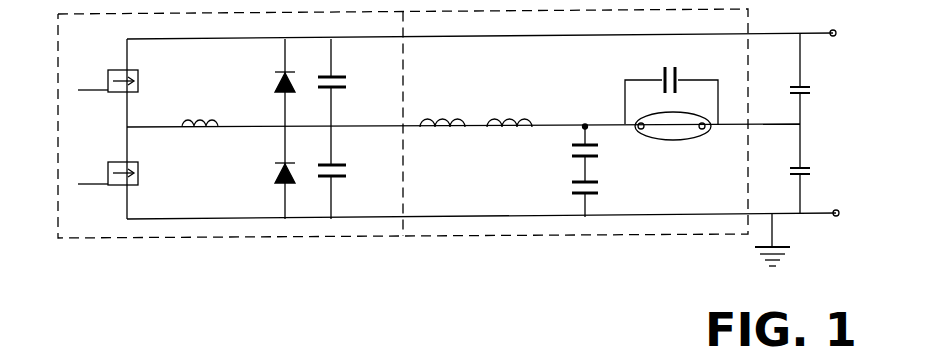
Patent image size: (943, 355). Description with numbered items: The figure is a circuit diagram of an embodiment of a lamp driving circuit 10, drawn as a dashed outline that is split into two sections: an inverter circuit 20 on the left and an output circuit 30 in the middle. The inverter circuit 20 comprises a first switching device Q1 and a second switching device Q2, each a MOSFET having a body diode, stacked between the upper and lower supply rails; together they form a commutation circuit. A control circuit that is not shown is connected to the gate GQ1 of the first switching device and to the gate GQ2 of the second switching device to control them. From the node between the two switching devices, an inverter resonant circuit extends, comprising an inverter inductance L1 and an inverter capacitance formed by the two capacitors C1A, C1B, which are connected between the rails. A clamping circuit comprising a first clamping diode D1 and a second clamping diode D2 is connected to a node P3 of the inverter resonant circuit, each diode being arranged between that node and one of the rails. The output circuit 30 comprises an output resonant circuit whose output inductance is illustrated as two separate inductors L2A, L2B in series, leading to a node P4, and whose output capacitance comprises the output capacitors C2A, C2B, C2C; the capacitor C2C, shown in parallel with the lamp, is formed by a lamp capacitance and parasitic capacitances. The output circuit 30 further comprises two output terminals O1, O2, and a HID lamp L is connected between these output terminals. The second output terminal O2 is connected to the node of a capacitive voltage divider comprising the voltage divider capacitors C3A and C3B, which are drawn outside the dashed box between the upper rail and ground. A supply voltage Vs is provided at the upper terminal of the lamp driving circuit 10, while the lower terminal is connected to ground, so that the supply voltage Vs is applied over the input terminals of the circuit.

The lamp driving circuit 10 is at (634, 239).
The inverter circuit 20 is at (232, 171).
The output circuit 30 is at (577, 171).
The first switching device Q1 is at (128, 81).
The second switching device Q2 is at (128, 174).
The gate of first switching device GQ1 is at (92, 114).
The gate of second switching device GQ2 is at (92, 209).
The inverter inductance L1 is at (200, 113).
The first clamping diode D1 is at (266, 83).
The second clamping diode D2 is at (266, 173).
The capacitor C1A is at (356, 83).
The capacitor C1B is at (356, 173).
The node of inverter resonant circuit P3 is at (370, 141).
The node P4 is at (552, 141).
The output inductor L2A is at (442, 112).
The output inductor L2B is at (509, 112).
The output capacitor C2A is at (608, 154).
The output capacitor C2B is at (607, 198).
The output capacitor C2C is at (671, 82).
The HID lamp L is at (678, 139).
The first output terminal O1 is at (628, 123).
The second output terminal O2 is at (715, 134).
The voltage divider capacitor C3A is at (818, 78).
The voltage divider capacitor C3B is at (817, 168).
The supply voltage Vs is at (863, 31).